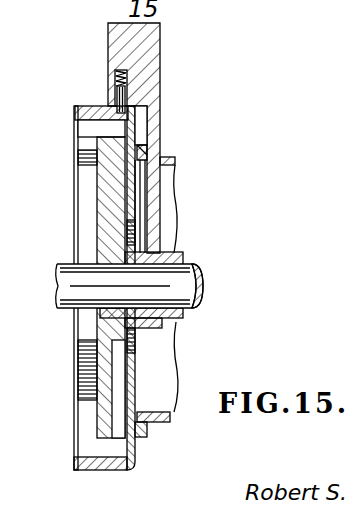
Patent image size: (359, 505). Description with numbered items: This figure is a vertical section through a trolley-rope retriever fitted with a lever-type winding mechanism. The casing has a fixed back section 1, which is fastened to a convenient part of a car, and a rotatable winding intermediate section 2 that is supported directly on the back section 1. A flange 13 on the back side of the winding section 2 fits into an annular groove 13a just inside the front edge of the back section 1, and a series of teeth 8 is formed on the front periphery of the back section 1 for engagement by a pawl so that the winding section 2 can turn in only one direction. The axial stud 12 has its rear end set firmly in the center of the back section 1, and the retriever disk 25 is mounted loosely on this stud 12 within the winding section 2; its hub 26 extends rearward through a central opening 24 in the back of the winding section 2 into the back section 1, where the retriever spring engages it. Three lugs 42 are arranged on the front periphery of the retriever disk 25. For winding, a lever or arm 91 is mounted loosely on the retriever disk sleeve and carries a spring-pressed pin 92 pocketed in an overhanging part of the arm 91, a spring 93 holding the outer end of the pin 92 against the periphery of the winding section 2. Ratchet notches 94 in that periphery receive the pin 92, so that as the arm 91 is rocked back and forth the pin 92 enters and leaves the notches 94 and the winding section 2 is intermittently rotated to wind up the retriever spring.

The back section 1 is at (178, 162).
The winding intermediate section 2 is at (88, 469).
The teeth 8 is at (148, 127).
The axial stud 12 is at (57, 290).
The flange 13 is at (137, 408).
The annular groove 13a is at (144, 151).
The central opening 24 is at (128, 353).
The retriever disk 25 is at (105, 200).
The hub 26 is at (180, 317).
The lugs 42 is at (80, 155).
The lever or arm 91 is at (152, 58).
The spring-pressed pin 92 is at (116, 97).
The spring 93 is at (116, 78).
The ratchet notches 94 is at (126, 121).